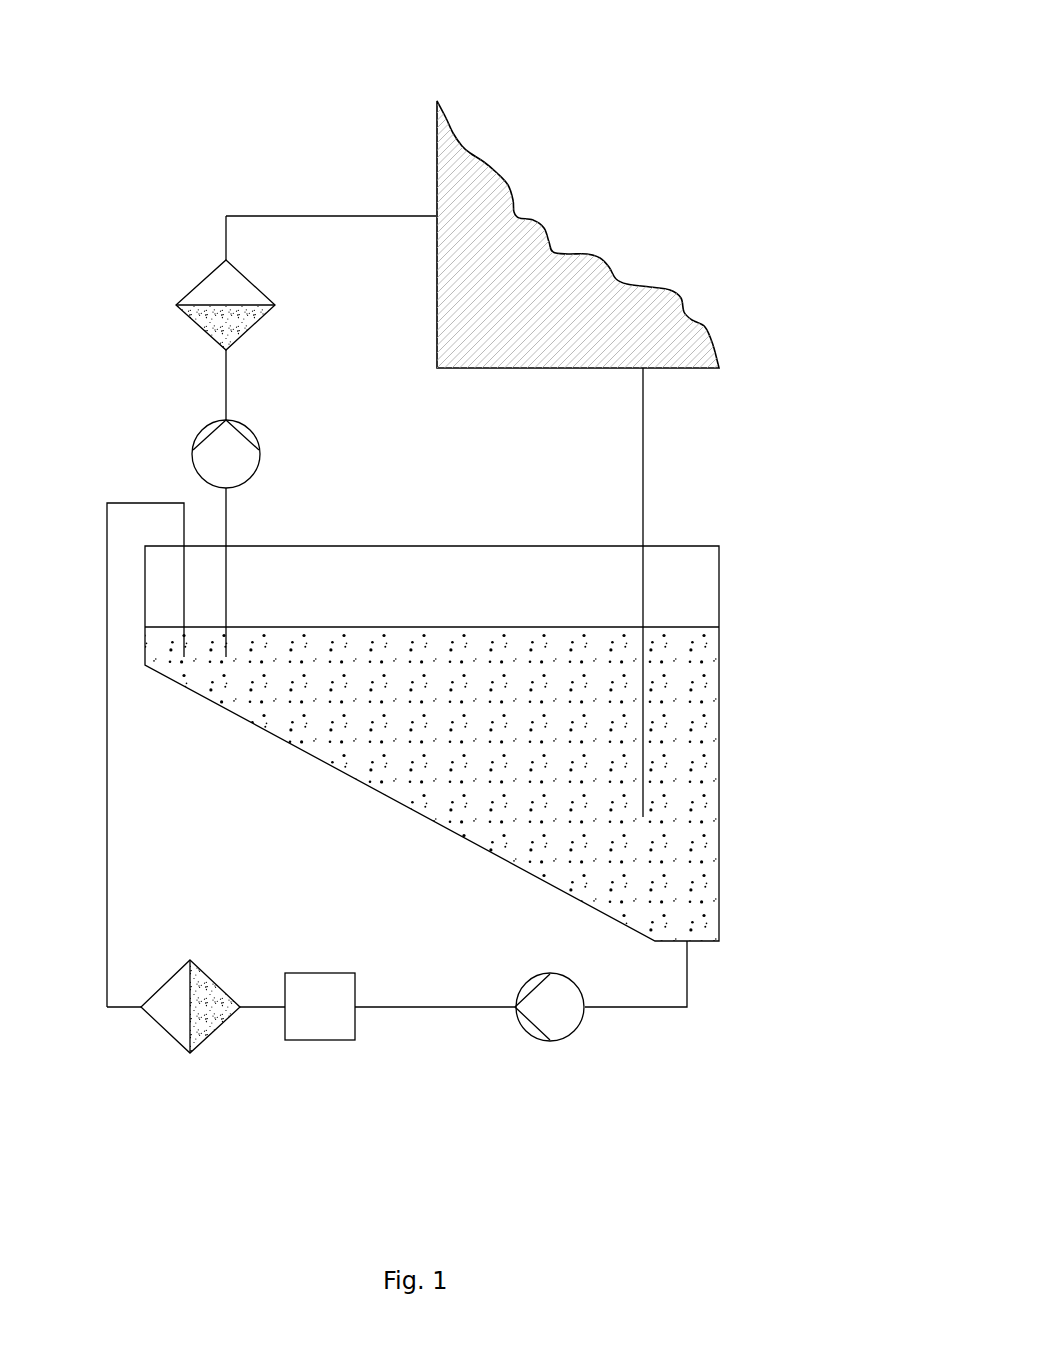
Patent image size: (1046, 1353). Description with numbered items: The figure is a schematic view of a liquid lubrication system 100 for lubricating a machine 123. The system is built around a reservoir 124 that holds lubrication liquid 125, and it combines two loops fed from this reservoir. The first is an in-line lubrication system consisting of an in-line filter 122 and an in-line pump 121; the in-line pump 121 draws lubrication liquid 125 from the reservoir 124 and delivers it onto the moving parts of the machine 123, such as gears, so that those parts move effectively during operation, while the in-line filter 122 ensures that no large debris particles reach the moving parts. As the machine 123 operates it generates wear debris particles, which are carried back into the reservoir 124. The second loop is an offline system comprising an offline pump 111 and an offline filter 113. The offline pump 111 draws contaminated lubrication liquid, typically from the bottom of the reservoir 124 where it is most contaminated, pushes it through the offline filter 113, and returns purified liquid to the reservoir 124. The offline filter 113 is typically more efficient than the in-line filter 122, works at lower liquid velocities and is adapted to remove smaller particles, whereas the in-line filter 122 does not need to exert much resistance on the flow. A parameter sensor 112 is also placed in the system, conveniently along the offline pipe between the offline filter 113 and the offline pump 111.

The liquid lubrication system 100 is at (306, 98).
The offline pump 111 is at (548, 1008).
The parameter sensor 112 is at (332, 1002).
The offline filter 113 is at (178, 1010).
The in-line pump 121 is at (217, 473).
The in-line filter 122 is at (237, 292).
The machine 123 is at (562, 260).
The reservoir 124 is at (695, 560).
The lubrication liquid 125 is at (697, 777).